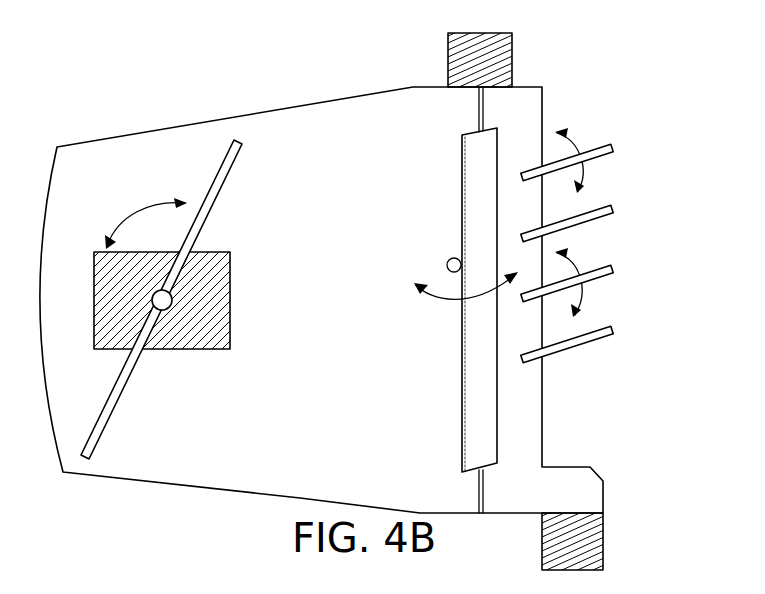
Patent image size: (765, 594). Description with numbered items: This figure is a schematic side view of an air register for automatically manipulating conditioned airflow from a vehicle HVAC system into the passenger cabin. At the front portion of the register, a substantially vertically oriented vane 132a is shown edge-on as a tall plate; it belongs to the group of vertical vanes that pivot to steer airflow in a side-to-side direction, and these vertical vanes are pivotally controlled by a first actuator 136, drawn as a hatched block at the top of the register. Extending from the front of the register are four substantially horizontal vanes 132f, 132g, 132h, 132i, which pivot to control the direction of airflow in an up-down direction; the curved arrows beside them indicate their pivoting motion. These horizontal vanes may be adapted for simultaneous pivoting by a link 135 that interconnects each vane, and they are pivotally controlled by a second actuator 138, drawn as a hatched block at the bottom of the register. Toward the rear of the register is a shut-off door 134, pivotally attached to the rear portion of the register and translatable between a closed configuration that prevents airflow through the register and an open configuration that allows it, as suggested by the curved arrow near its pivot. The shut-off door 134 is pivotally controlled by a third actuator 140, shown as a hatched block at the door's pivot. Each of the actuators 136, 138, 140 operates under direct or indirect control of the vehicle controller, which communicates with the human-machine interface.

The vane 132a is at (463, 190).
The vane 132f is at (612, 150).
The vane 132g is at (612, 210).
The vane 132h is at (612, 270).
The vane 132i is at (612, 331).
The shut-off door 134 is at (228, 180).
The link 135 is at (447, 265).
The first actuator 136 is at (507, 50).
The second actuator 138 is at (603, 540).
The third actuator 140 is at (230, 298).